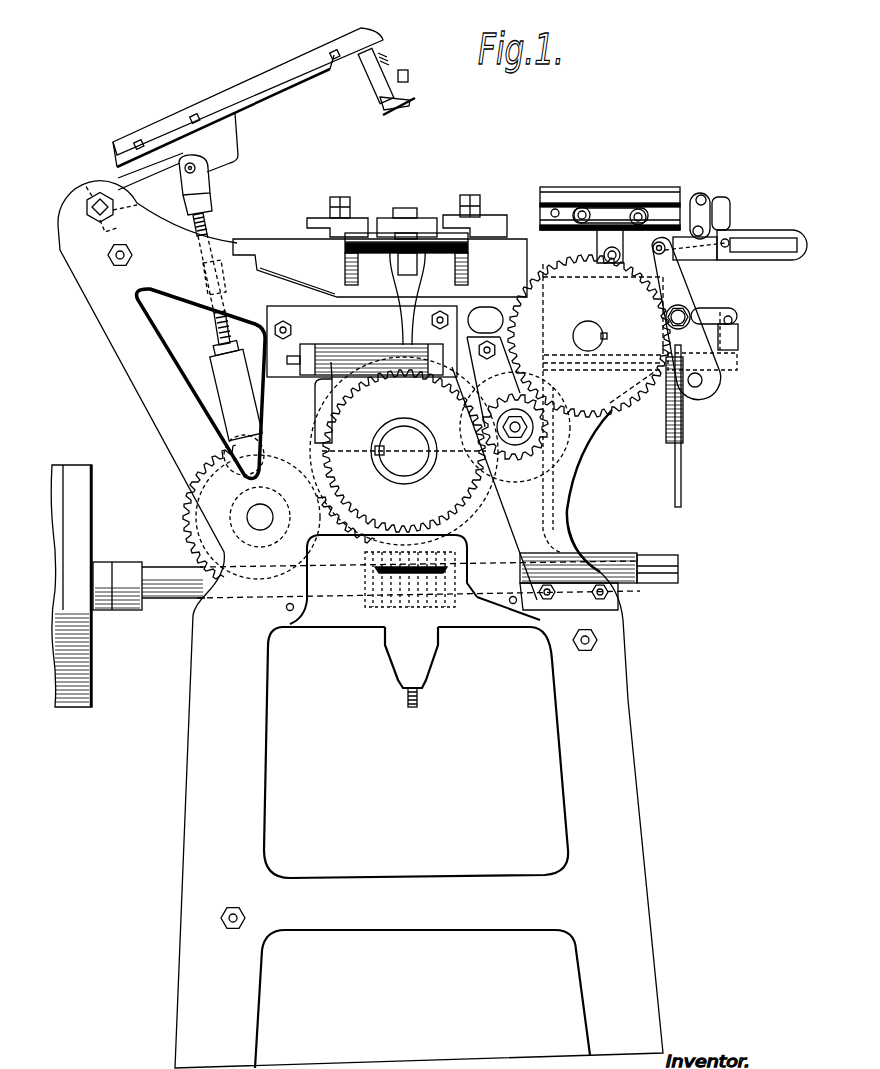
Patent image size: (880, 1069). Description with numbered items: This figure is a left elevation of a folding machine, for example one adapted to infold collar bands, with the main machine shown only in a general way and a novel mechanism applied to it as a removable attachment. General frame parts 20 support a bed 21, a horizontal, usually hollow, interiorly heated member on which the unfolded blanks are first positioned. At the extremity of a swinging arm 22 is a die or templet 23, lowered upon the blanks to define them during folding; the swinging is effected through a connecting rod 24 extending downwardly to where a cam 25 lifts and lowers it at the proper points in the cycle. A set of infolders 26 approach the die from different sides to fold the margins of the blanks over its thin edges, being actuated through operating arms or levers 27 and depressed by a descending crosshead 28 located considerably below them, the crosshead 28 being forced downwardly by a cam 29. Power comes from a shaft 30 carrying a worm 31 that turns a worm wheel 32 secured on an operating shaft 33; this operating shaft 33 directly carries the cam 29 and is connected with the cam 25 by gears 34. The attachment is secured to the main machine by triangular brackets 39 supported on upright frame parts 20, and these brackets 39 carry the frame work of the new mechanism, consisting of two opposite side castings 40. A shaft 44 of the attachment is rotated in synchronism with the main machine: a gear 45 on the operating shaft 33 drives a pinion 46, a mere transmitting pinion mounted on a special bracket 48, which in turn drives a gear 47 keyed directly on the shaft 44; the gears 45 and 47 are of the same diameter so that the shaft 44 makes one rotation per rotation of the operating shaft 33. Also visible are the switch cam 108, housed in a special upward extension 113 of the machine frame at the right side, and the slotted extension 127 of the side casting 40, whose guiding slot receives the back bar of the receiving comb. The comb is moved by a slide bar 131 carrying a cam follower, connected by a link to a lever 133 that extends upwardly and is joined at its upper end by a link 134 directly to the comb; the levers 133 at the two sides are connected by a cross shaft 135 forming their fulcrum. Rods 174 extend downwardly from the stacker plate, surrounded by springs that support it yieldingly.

The frame parts 20 is at (360, 624).
The bed 21 is at (380, 270).
The swinging arm 22 is at (246, 72).
The die or templet 23 is at (383, 110).
The connecting rod 24 is at (214, 331).
The cam 25 is at (222, 446).
The infolders 26 is at (388, 218).
The operating arms or levers 27 is at (410, 287).
The crosshead 28 is at (383, 580).
The cam 29 is at (372, 535).
The shaft 30 is at (167, 593).
The worm 31 is at (385, 622).
The worm wheel 32 is at (301, 402).
The operating shaft 33 is at (404, 451).
The gears 34 is at (190, 528).
The triangular brackets 39 is at (572, 443).
The side castings 40 is at (700, 272).
The shaft 44 is at (597, 334).
The gear 45 is at (404, 451).
The pinion 46 is at (522, 450).
The gear 47 is at (589, 336).
The bracket 48 is at (532, 532).
The switch cam 108 is at (603, 203).
The upward extension 113 is at (662, 188).
The slotted extension 127 is at (783, 230).
The slide bar 131 is at (723, 338).
The lever 133 is at (693, 358).
The link 134 is at (723, 257).
The cross shaft 135 is at (703, 382).
The rods 174 is at (682, 490).